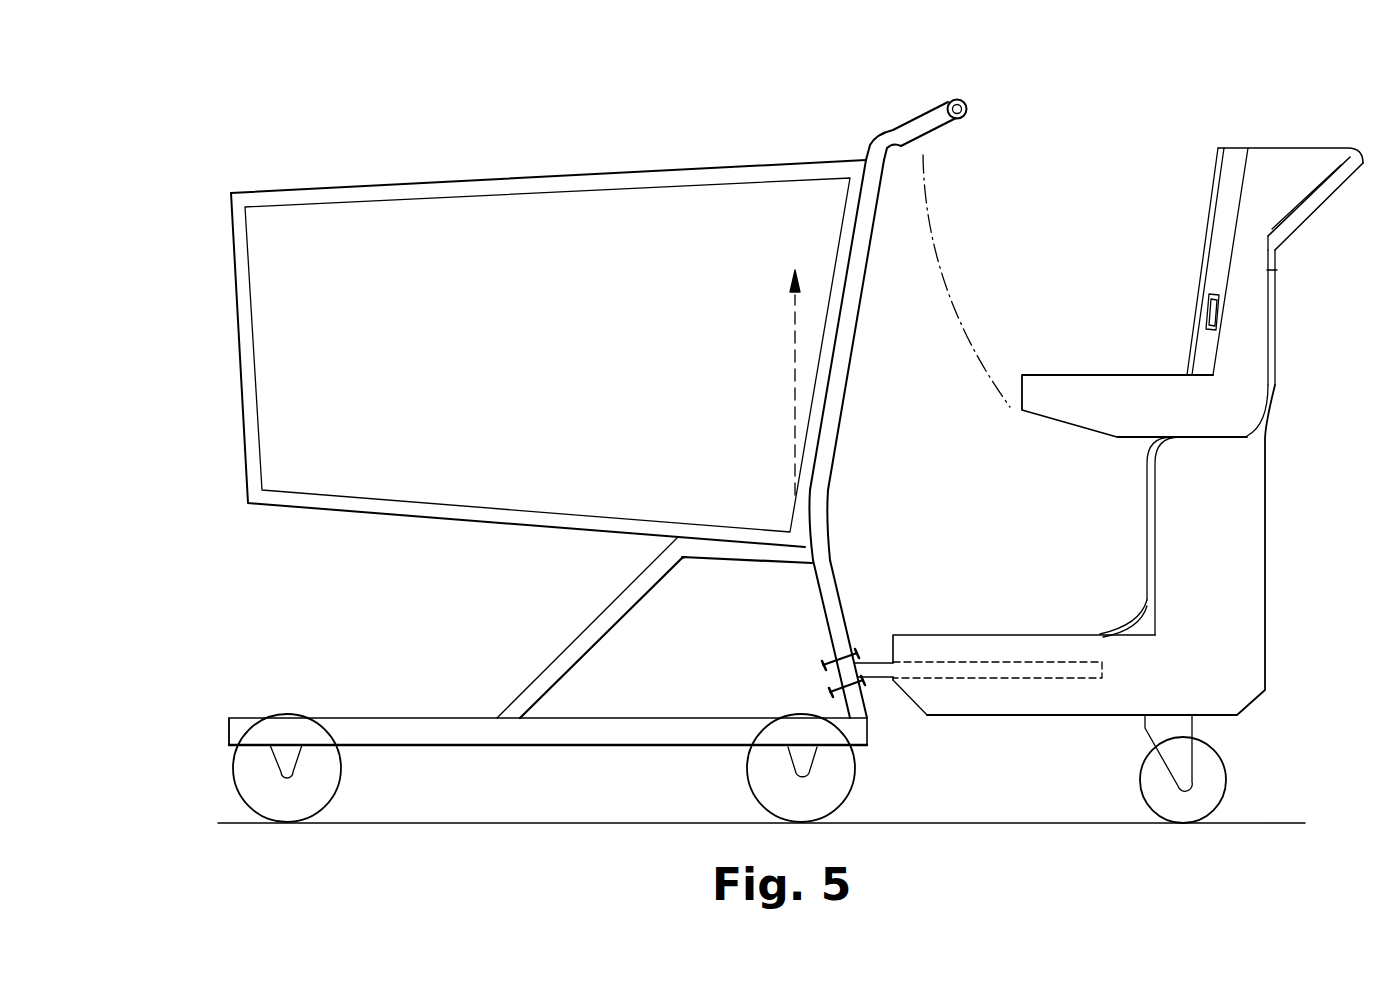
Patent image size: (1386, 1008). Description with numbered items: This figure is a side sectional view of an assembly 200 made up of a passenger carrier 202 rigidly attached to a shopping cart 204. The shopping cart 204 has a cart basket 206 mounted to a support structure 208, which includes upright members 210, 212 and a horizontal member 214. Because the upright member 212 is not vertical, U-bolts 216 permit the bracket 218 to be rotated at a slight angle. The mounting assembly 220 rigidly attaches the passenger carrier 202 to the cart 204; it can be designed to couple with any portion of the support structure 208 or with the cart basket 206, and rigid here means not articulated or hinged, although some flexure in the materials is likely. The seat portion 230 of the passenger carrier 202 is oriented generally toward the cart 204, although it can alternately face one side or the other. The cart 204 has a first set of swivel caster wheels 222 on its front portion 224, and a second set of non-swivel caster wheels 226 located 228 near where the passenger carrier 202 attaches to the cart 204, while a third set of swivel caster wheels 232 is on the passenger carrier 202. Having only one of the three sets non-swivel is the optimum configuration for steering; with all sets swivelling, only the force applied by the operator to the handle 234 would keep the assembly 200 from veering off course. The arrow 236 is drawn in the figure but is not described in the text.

The assembly 200 is at (654, 100).
The passenger carrier 202 is at (1205, 158).
The shopping cart 204 is at (476, 178).
The cart basket 206 is at (547, 355).
The support structure 208 is at (540, 656).
The upright member 210 is at (622, 612).
The upright member 212 is at (828, 610).
The horizontal member 214 is at (560, 736).
The U-bolts 216 is at (860, 660).
The bracket 218 is at (830, 680).
The mounting assembly 220 is at (880, 690).
The swivel caster wheels 222 is at (317, 788).
The front portion 224 is at (234, 718).
The non-swivel caster wheels 226 is at (767, 780).
The location near where the passenger carrier attaches to the cart 228 is at (882, 716).
The seat portion 230 is at (1097, 375).
The swivel caster wheels 232 is at (1157, 778).
The handle 234 is at (1343, 160).
The basket pivot direction 236 is at (792, 317).